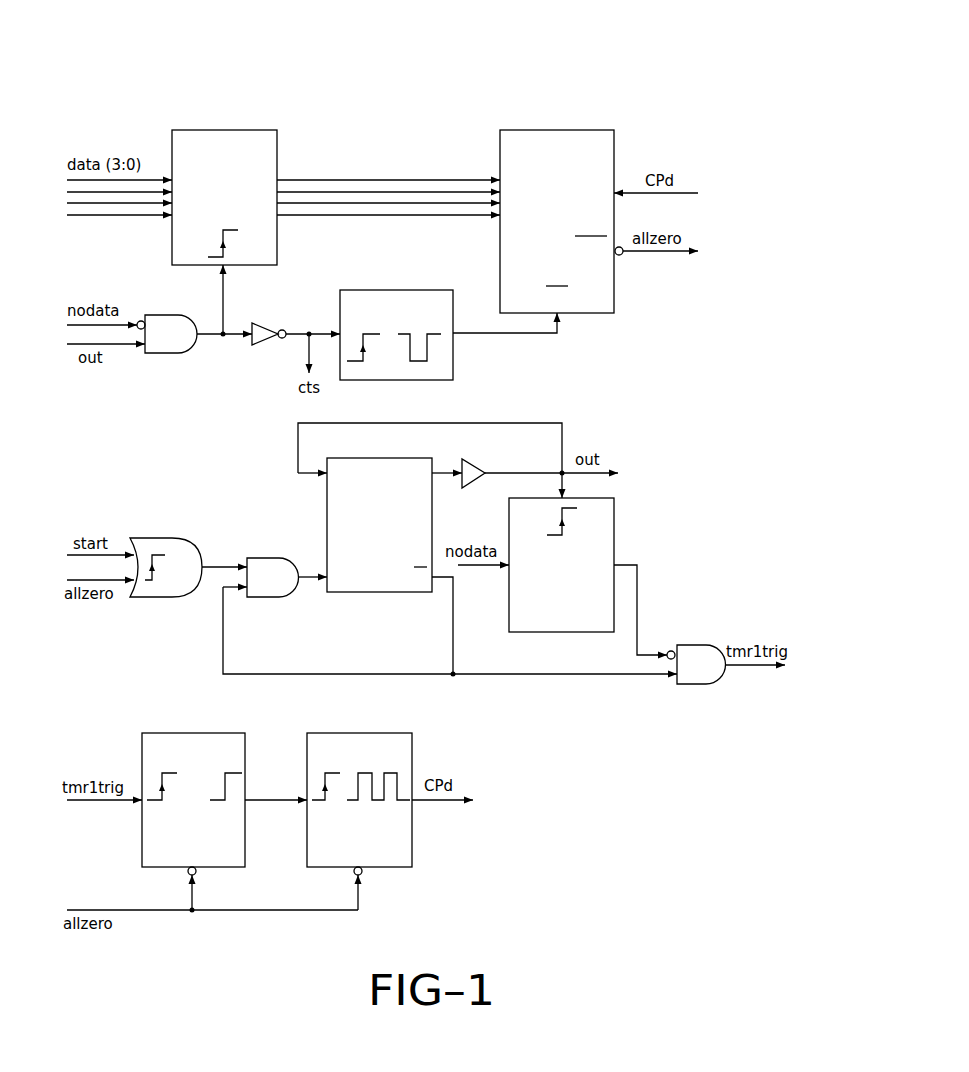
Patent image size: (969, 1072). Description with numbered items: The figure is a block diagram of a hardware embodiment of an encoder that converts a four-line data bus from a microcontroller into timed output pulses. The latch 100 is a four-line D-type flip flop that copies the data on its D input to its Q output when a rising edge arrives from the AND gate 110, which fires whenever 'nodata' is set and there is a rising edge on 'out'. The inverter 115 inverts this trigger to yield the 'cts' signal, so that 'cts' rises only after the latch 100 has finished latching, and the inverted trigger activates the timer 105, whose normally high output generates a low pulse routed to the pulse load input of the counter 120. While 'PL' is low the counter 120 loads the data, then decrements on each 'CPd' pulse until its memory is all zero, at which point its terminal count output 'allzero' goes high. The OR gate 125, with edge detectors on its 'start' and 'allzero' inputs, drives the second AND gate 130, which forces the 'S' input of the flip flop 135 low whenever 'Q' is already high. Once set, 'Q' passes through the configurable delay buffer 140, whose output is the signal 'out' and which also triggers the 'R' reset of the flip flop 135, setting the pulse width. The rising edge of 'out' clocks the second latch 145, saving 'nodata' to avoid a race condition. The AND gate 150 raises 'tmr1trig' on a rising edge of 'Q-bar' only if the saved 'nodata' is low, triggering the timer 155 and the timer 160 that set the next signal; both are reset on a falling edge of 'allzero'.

The latch 100 is at (222, 130).
The timer 105 is at (398, 287).
The AND gate 110 is at (160, 353).
The inverter 115 is at (252, 345).
The counter 120 is at (560, 130).
The OR gate 125 is at (158, 597).
The second AND gate 130 is at (263, 597).
The flip flop 135 is at (327, 507).
The delay buffer 140 is at (470, 459).
The second latch 145 is at (614, 518).
The AND gate 150 is at (700, 645).
The timer 155 is at (197, 733).
The timer 160 is at (352, 733).